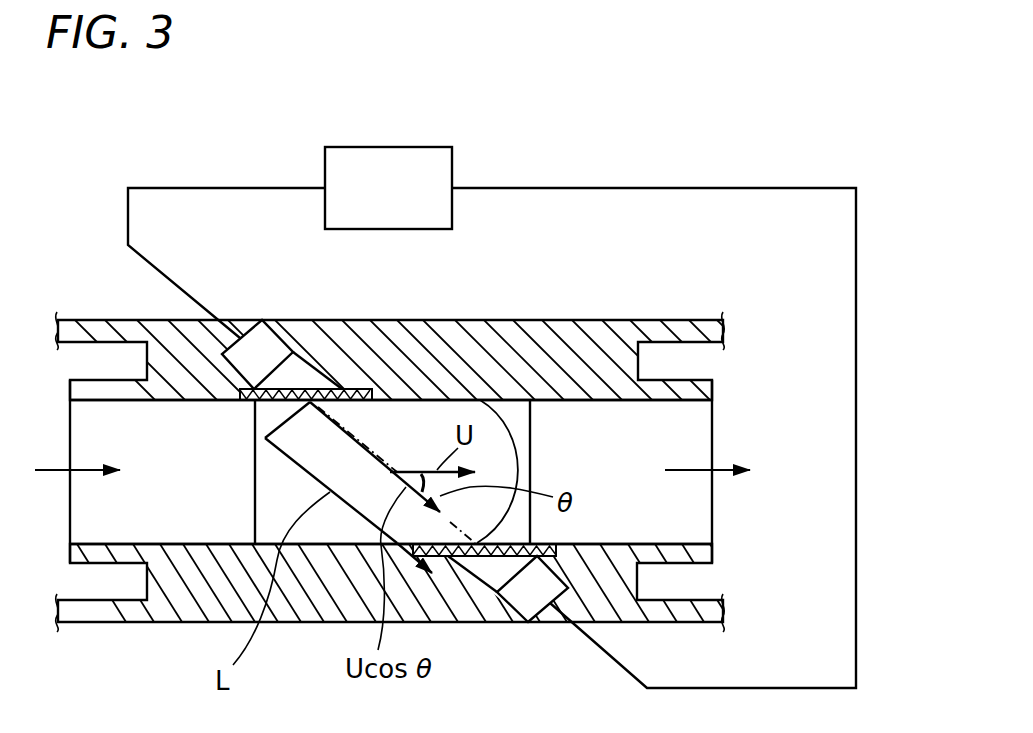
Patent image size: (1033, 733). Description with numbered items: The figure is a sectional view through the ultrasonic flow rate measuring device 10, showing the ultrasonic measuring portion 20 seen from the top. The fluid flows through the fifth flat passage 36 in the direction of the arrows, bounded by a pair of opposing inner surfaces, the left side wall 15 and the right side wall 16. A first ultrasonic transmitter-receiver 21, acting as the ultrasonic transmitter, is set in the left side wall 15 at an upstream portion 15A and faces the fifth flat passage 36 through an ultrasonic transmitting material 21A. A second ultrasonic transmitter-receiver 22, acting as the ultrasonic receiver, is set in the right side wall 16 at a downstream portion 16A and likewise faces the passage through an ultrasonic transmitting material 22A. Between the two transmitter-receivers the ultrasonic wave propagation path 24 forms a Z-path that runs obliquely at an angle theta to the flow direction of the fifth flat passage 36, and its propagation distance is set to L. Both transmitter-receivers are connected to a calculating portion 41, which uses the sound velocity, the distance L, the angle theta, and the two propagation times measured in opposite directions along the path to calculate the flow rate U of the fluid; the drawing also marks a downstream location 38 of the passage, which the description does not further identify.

The ultrasonic flow rate measuring device 10 is at (456, 366).
The left side wall 15 is at (582, 326).
The upstream portion of left side wall 15A is at (428, 400).
The right side wall 16 is at (297, 606).
The downstream portion of right side wall 16A is at (253, 542).
The ultrasonic measuring portion 20 is at (478, 175).
The first ultrasonic transmitter-receiver 21 is at (293, 330).
The ultrasonic transmitting material 21A is at (318, 372).
The second ultrasonic transmitter-receiver 22 is at (488, 582).
The ultrasonic transmitting material 22A is at (540, 560).
The ultrasonic wave propagation path 24 is at (377, 451).
The fifth flat passage 36 is at (270, 493).
The downstream measurement boundary 38 is at (507, 422).
The calculating portion 41 is at (391, 147).